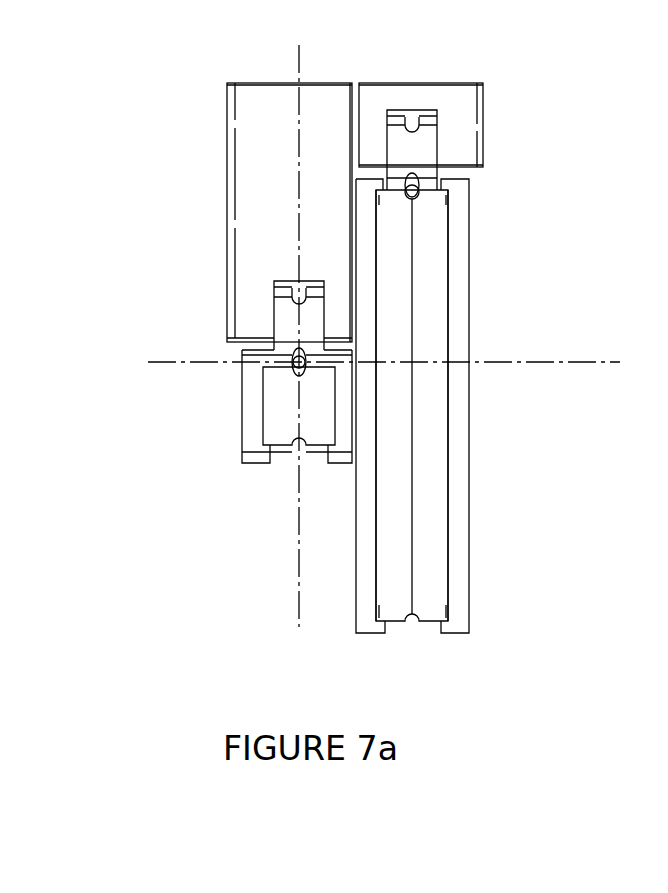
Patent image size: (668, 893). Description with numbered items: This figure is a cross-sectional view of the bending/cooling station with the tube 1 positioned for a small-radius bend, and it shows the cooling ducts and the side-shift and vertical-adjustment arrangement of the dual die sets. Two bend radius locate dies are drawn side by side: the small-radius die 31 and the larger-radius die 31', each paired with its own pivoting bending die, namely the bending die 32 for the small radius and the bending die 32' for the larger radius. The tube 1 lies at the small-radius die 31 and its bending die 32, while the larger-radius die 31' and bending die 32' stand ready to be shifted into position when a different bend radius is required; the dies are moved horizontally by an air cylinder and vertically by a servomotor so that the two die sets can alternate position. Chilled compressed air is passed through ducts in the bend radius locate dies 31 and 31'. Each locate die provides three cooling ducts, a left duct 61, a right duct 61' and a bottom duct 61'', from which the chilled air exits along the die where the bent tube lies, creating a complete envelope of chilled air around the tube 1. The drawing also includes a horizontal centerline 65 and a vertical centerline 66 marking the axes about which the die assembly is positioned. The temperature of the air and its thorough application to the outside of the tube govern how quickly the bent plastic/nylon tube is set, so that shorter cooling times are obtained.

The tube 1 is at (292, 362).
The small-radius die 31 is at (239, 423).
The larger-radius die 31' is at (482, 410).
The pivoting bending die 32 is at (225, 293).
The pivoting bending die 32' is at (513, 144).
The cooling duct 61 is at (504, 405).
The cooling duct 61' is at (542, 386).
The cooling duct 61'' is at (528, 406).
The horizontal axis 65 is at (533, 363).
The vertical axis 66 is at (300, 553).